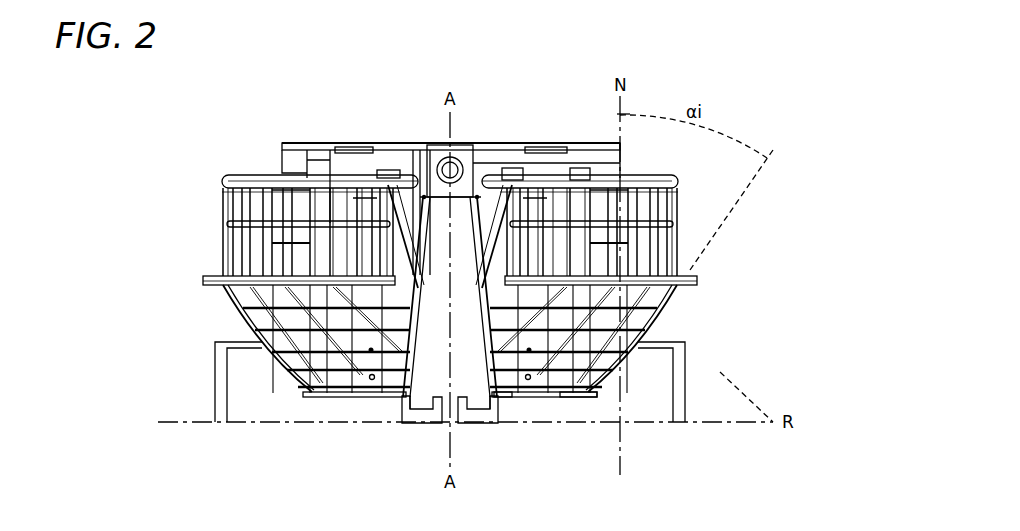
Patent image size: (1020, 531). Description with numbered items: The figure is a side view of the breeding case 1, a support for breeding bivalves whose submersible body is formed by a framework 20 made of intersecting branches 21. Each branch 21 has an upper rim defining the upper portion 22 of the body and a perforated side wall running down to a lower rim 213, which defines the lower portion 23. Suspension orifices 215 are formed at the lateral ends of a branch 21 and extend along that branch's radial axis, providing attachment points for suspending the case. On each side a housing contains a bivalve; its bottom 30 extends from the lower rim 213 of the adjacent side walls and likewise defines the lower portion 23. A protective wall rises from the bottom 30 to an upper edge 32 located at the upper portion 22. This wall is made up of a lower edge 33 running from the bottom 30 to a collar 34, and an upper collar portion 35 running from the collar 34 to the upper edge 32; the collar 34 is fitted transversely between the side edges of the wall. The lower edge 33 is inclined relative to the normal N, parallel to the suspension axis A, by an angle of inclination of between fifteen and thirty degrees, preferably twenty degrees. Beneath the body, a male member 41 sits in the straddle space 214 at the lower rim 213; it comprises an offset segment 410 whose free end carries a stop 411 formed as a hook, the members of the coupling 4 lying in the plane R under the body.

The breeding case 1 is at (779, 199).
The framework 20 is at (391, 148).
The branch 21 is at (322, 143).
The upper portion 22 is at (249, 146).
The suspension orifice 215 is at (462, 162).
The upper edge 32 is at (223, 177).
The bottom 30 is at (689, 227).
The upper collar portion 35 is at (226, 232).
The collar 34 is at (205, 281).
The lower edge 33 is at (226, 307).
The straddle space 214 is at (428, 298).
The lower rim 213 is at (512, 405).
The lower portion 23 is at (610, 405).
The support base 4 is at (441, 452).
The male member 41 is at (428, 424).
The offset segment 410 is at (403, 403).
The stop 411 is at (474, 404).